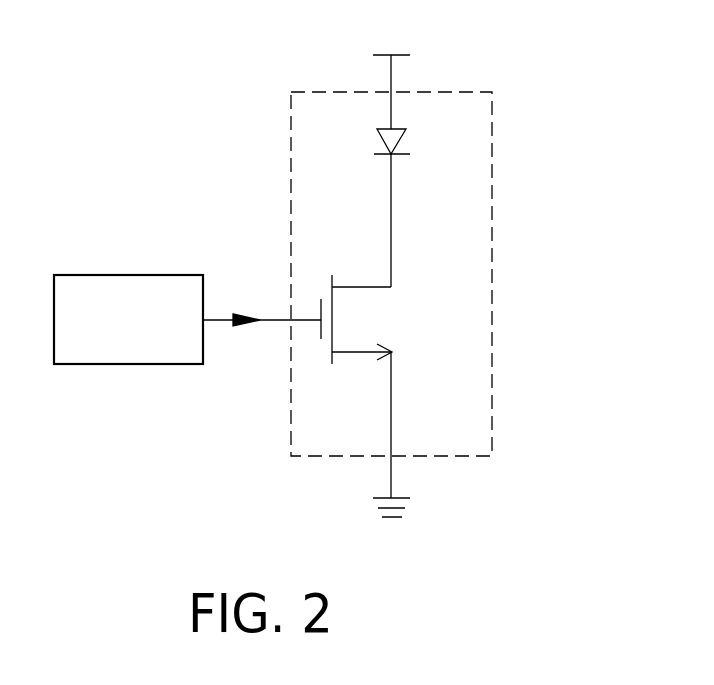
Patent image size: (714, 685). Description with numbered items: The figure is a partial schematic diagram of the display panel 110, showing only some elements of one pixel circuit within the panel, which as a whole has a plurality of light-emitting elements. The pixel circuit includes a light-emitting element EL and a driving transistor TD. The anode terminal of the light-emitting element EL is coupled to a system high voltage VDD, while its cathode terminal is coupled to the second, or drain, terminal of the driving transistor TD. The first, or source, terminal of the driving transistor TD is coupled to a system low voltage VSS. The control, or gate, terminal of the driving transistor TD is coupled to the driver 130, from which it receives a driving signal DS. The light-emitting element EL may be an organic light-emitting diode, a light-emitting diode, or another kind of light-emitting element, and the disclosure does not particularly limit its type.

The display panel 110 is at (492, 147).
The driver 130 is at (74, 274).
The system high voltage VDD is at (418, 84).
The system low voltage VSS is at (417, 502).
The light-emitting element EL is at (413, 208).
The driving transistor TD is at (375, 386).
The driving signal DS is at (262, 301).